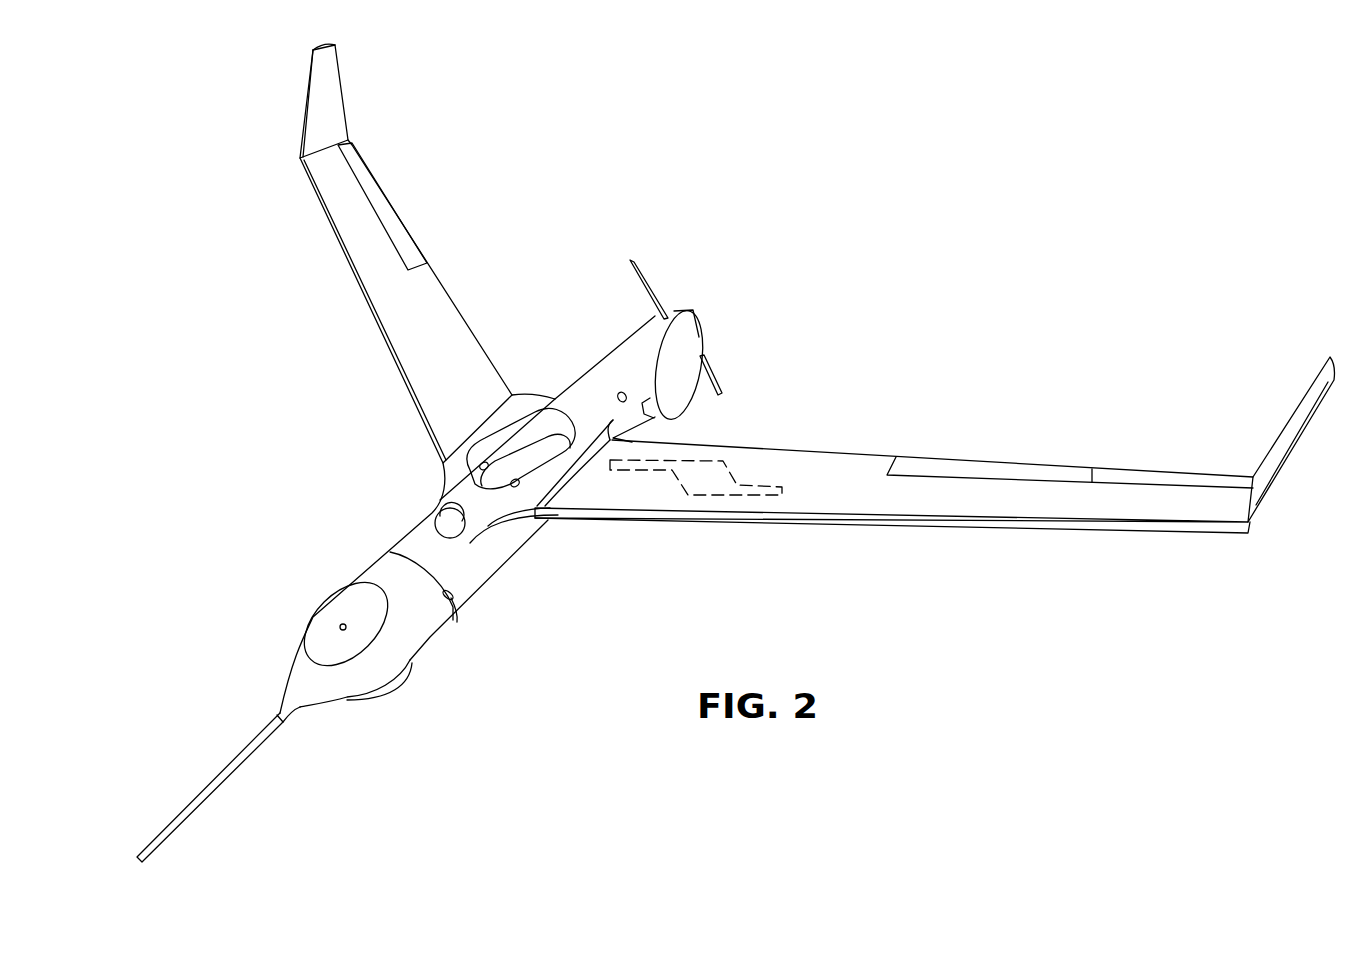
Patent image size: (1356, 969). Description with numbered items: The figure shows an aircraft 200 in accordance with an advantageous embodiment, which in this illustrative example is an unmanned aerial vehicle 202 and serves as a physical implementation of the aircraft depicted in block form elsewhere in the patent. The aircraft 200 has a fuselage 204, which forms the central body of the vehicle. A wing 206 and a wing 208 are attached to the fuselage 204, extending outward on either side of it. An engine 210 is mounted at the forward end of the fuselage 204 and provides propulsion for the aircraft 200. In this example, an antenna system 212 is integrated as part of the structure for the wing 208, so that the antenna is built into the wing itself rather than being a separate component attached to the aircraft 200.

The aircraft 200 is at (886, 250).
The unmanned aerial vehicle 202 is at (953, 528).
The fuselage 204 is at (425, 640).
The wing 206 is at (380, 340).
The wing 208 is at (983, 468).
The engine 210 is at (688, 316).
The antenna system 212 is at (744, 498).